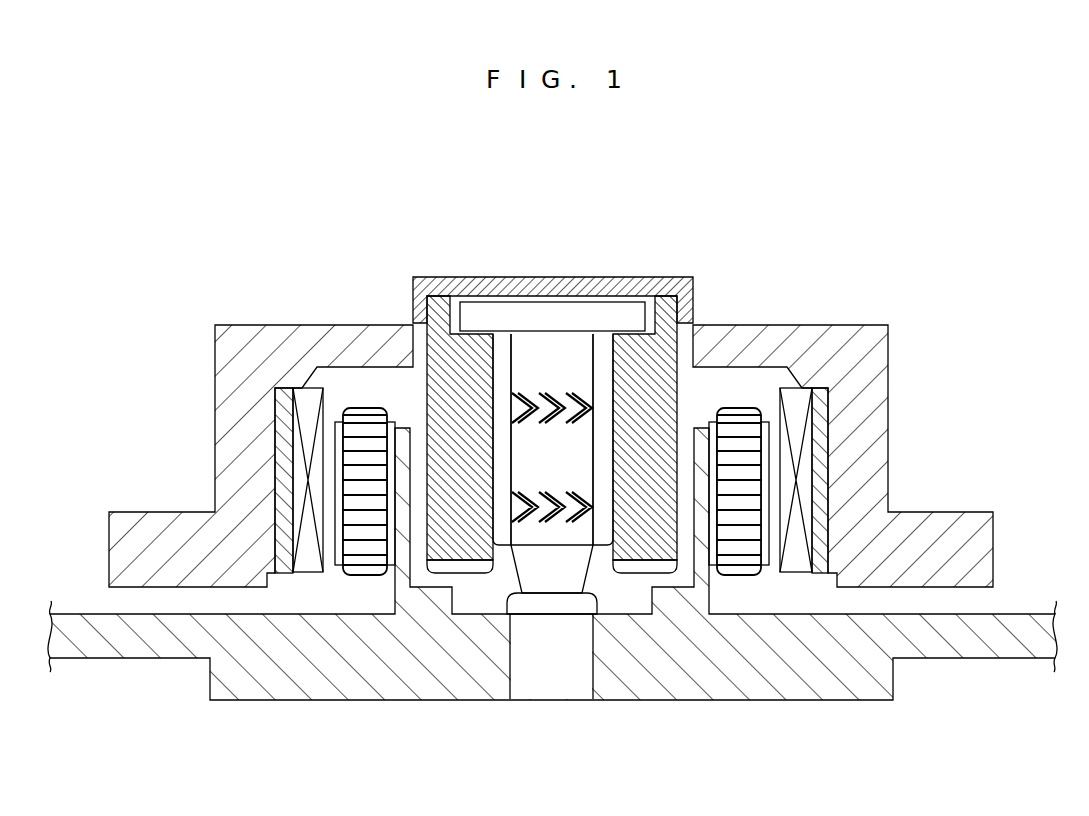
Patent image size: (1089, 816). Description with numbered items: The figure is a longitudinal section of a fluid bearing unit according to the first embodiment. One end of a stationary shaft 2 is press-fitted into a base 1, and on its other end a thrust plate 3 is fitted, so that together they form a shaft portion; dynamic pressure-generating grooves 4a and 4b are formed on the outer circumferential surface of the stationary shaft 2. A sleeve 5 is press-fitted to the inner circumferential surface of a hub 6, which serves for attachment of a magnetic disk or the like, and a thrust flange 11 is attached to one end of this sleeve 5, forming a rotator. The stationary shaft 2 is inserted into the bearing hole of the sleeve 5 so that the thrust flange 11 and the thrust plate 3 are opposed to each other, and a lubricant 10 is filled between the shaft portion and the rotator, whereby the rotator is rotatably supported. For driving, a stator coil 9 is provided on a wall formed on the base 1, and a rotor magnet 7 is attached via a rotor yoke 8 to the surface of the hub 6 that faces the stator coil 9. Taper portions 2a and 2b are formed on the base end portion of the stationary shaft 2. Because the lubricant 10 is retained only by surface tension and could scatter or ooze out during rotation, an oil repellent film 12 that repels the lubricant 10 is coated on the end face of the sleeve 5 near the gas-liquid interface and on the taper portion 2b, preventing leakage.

The base 1 is at (873, 683).
The stationary shaft 2 is at (576, 683).
The taper portion 2a is at (590, 568).
The taper portion 2b is at (510, 595).
The thrust plate 3 is at (614, 312).
The dynamic pressure-generating groove 4a is at (565, 405).
The dynamic pressure-generating groove 4b is at (537, 492).
The sleeve 5 is at (412, 307).
The hub 6 is at (860, 360).
The rotor magnet 7 is at (798, 543).
The rotor yoke 8 is at (820, 437).
The stator coil 9 is at (362, 430).
The lubricant 10 is at (500, 462).
The thrust flange 11 is at (660, 292).
The oil repellent film 12 is at (432, 572).